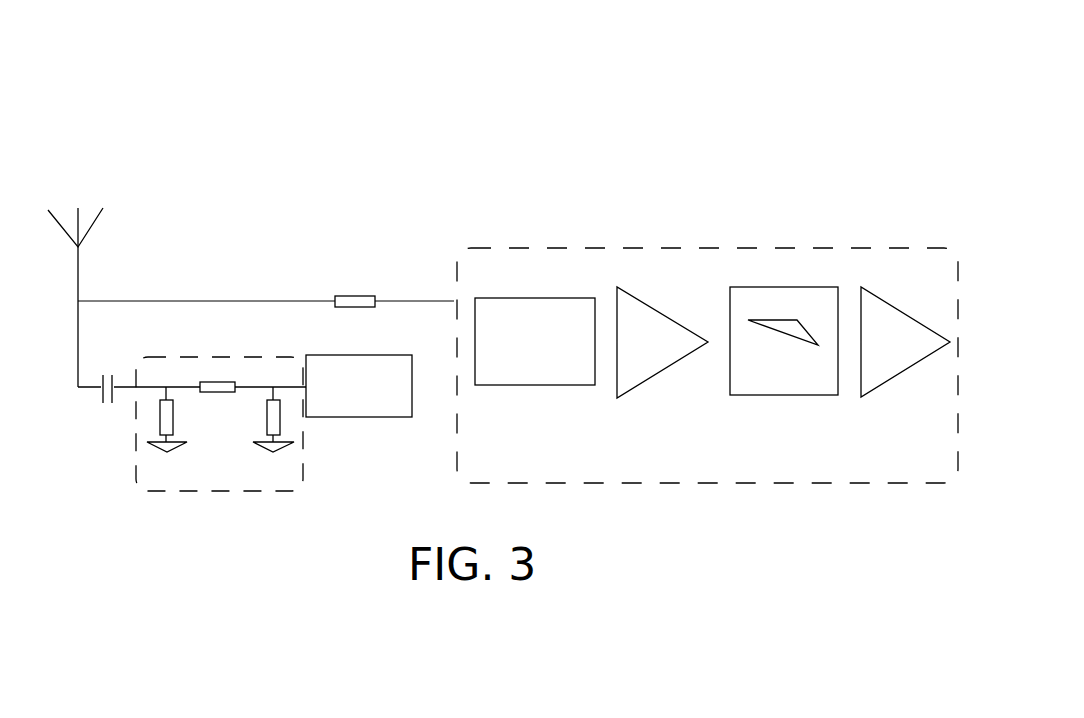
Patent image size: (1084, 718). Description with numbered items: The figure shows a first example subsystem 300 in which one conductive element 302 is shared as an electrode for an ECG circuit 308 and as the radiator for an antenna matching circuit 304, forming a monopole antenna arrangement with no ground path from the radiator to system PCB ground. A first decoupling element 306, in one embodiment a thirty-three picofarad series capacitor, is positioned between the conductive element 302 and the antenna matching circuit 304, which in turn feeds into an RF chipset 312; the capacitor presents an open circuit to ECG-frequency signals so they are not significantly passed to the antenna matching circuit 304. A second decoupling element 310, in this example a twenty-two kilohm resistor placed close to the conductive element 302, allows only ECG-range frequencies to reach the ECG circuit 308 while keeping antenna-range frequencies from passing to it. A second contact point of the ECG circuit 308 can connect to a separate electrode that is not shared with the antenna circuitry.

The subsystem 300 is at (862, 124).
The conductive element 302 is at (112, 190).
The antenna matching circuit 304 is at (215, 503).
The first decoupling element 306 is at (108, 420).
The ECG circuit 308 is at (752, 228).
The second decoupling element 310 is at (390, 292).
The RF chipset 312 is at (359, 417).